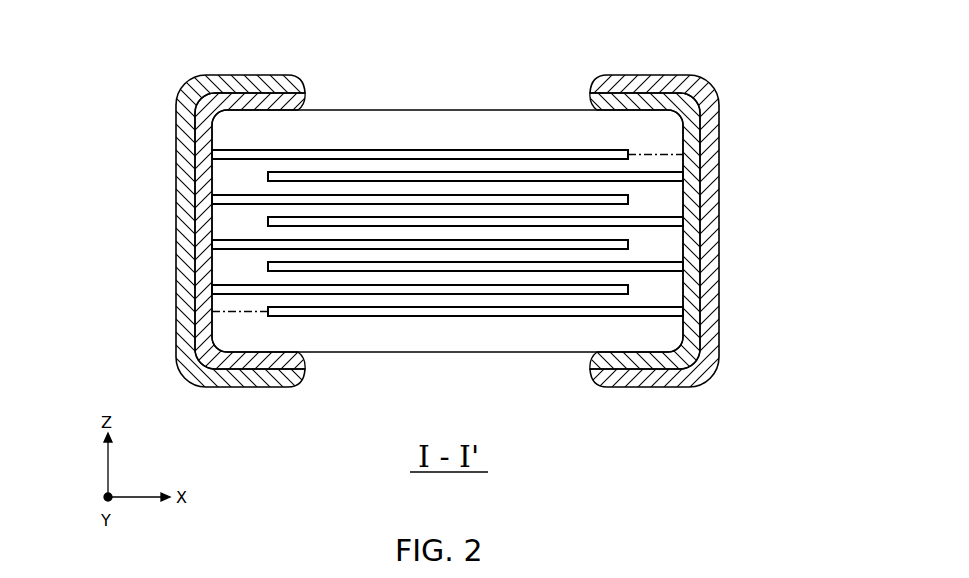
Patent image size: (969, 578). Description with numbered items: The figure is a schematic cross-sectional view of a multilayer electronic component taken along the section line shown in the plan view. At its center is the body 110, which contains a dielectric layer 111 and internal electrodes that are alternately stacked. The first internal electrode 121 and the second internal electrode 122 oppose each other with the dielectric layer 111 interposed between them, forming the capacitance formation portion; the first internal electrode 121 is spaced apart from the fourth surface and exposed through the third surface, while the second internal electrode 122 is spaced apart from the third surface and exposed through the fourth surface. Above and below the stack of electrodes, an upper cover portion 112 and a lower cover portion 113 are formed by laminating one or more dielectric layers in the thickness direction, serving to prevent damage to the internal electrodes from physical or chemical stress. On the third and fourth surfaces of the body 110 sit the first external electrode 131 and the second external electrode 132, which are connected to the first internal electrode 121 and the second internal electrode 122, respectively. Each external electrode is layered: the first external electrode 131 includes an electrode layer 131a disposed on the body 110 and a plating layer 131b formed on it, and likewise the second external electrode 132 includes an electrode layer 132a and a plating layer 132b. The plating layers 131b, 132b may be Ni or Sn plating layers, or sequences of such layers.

The body 110 is at (380, 110).
The dielectric layer 111 is at (333, 188).
The upper cover portion 112 is at (452, 128).
The lower cover portion 113 is at (450, 335).
The first internal electrode 121 is at (515, 155).
The second internal electrode 122 is at (573, 175).
The first external electrode 131 is at (167, 231).
The electrode layer 131a is at (205, 162).
The plating layer 131b is at (180, 187).
The second external electrode 132 is at (728, 231).
The electrode layer 132a is at (690, 140).
The plating layer 132b is at (715, 165).